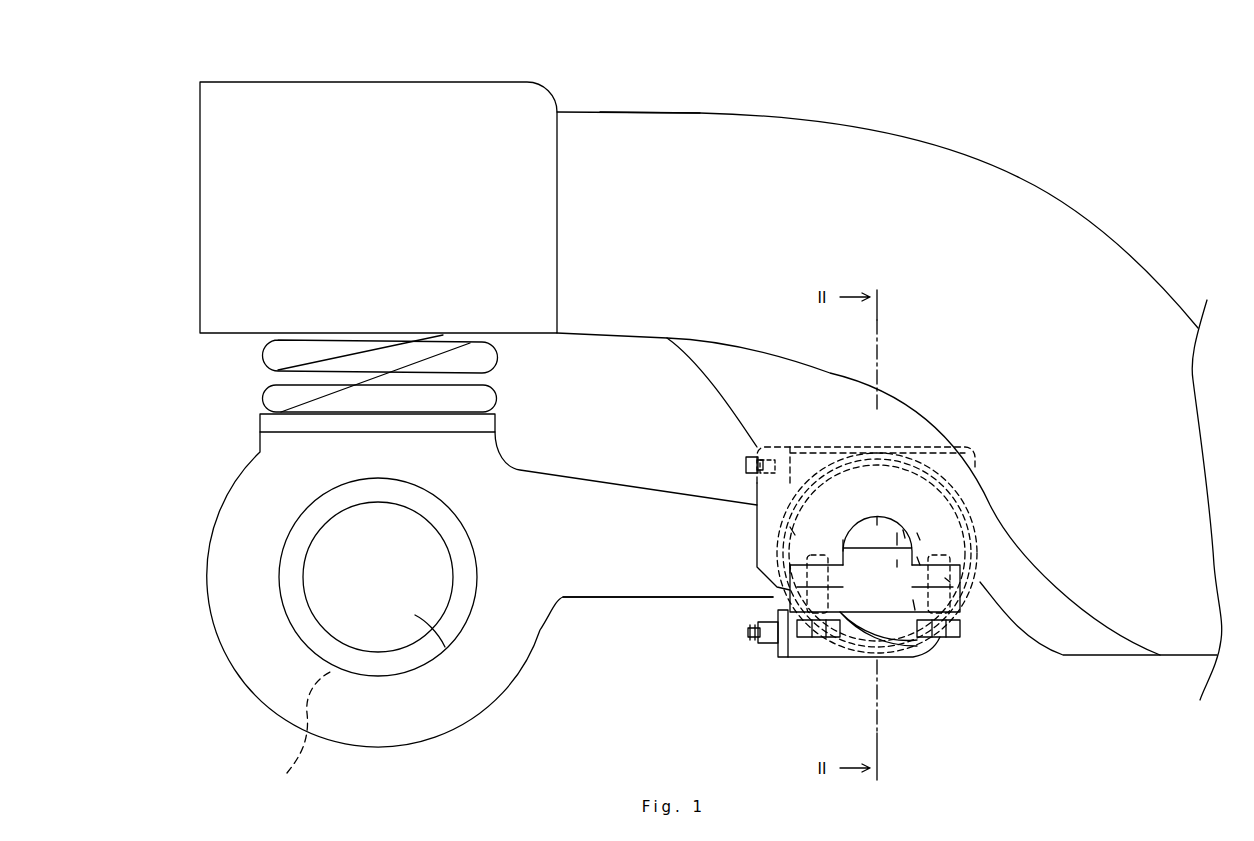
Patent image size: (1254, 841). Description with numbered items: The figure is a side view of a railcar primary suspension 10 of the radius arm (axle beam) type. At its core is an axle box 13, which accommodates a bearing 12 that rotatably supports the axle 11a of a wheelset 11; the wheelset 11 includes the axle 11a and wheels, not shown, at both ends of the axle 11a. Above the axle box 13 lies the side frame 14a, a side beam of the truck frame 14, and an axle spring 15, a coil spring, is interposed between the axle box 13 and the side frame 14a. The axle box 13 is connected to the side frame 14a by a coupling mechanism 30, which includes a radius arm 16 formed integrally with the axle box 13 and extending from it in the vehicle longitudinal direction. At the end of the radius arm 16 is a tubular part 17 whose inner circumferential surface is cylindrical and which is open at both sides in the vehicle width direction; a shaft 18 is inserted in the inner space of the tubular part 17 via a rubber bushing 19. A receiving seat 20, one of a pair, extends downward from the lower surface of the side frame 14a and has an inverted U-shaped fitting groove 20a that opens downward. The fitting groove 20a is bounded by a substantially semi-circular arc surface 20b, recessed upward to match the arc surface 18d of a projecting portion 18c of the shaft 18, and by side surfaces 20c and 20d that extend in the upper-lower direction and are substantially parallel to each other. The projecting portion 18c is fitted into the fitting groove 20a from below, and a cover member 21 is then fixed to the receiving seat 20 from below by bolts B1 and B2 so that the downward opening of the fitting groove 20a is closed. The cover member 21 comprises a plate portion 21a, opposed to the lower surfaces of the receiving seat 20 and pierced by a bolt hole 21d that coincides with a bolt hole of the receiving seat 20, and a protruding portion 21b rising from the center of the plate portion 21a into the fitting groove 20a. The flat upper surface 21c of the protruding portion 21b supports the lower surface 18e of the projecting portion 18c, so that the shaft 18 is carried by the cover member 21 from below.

The primary suspension 10 is at (171, 228).
The wheelset 11 is at (325, 612).
The axle 11a is at (445, 647).
The bearing 12 is at (294, 735).
The axle box 13 is at (210, 605).
The truck frame 14 is at (1100, 230).
The side frame 14a is at (642, 110).
The axle spring 15 is at (262, 358).
The radius arm 16 is at (620, 598).
The tubular part 17 is at (793, 657).
The shaft 18 is at (860, 627).
The projecting portion 18c is at (903, 530).
The arc surface 18d is at (877, 513).
The lower surface 18e is at (917, 533).
The rubber bushing 19 is at (847, 647).
The receiving seat 20 is at (723, 382).
The fitting groove 20a is at (843, 547).
The arc surface 20b is at (897, 533).
The side surface 20c is at (917, 557).
The side surface 20d is at (843, 557).
The cover member 21 is at (965, 610).
The plate portion 21a is at (915, 610).
The protruding portion 21b is at (897, 567).
The upper surface 21c is at (945, 578).
The bolt hole 21d is at (790, 573).
The coupling mechanism 30 is at (657, 678).
The bolt B1 is at (953, 643).
The bolt B2 is at (817, 655).